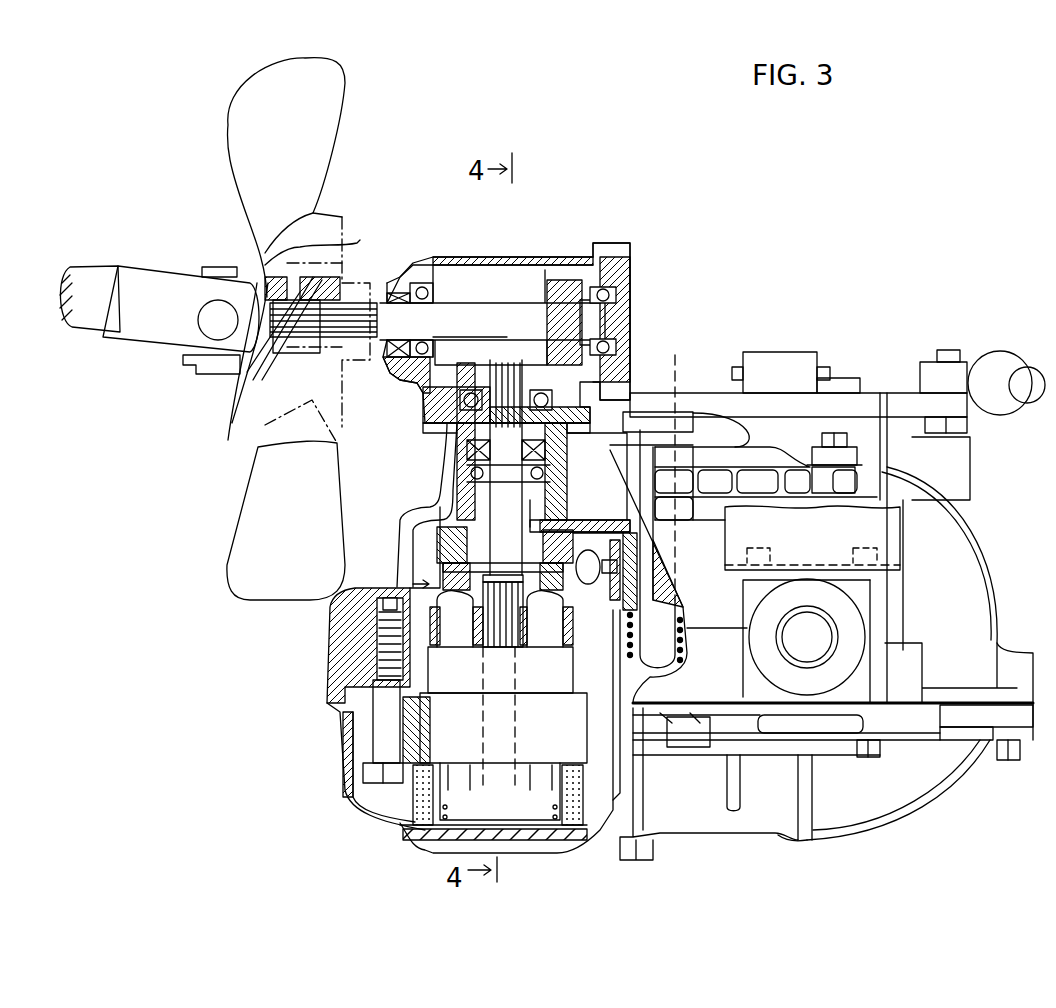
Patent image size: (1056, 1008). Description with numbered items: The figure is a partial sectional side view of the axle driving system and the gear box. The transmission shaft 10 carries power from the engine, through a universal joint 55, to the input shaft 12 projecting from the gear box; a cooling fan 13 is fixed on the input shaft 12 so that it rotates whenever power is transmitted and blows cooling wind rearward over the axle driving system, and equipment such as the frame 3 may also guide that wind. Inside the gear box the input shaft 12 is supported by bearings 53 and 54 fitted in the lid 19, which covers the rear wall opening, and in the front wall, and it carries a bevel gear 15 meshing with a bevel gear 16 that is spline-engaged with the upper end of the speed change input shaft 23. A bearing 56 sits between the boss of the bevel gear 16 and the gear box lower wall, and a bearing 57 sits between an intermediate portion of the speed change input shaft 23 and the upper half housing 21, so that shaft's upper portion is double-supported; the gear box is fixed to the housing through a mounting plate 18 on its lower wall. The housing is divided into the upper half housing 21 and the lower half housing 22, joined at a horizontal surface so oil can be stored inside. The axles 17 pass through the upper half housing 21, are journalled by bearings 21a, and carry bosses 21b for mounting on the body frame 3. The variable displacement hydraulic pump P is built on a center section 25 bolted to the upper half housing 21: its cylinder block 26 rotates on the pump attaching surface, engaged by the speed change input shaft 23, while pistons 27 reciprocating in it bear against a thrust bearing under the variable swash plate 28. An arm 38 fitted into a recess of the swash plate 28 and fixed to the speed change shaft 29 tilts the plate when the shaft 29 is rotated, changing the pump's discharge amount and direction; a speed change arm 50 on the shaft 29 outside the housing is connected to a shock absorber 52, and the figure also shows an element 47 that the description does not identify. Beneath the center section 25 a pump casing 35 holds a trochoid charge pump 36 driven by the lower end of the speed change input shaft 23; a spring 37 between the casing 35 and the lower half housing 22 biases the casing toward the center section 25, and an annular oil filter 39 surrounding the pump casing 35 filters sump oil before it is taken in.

The body frame 3 is at (885, 548).
The transmission shaft 10 is at (88, 278).
The input shaft 12 is at (485, 300).
The cooling fan 13 is at (330, 118).
The bevel gear 15 is at (558, 268).
The bevel gear 16 is at (430, 405).
The axles 17 is at (828, 633).
The mounting plate 18 is at (455, 415).
The lid 19 is at (620, 248).
The upper half housing 21 is at (997, 599).
The bearings 21a is at (880, 618).
The bosses 21b is at (905, 583).
The lower half housing 22 is at (950, 781).
The speed change input shaft 23 is at (532, 518).
The center section 25 is at (583, 730).
The cylinder block 26 is at (565, 677).
The pistons 27 is at (472, 622).
The variable swash plate 28 is at (438, 548).
The speed change shaft 29 is at (692, 681).
The pump casing 35 is at (448, 770).
The charge pump 36 is at (550, 776).
The spring 37 is at (420, 826).
The arm 38 is at (608, 598).
The annular oil filter 39 is at (420, 800).
The switch 47 is at (792, 352).
The speed change arm 50 is at (882, 405).
The shock absorber 52 is at (985, 360).
The bearing 53 is at (640, 283).
The bearing 54 is at (448, 280).
The universal joint 55 is at (181, 246).
The bearing 56 is at (445, 445).
The bearing 57 is at (445, 473).
The variable displacement hydraulic pump P is at (350, 590).